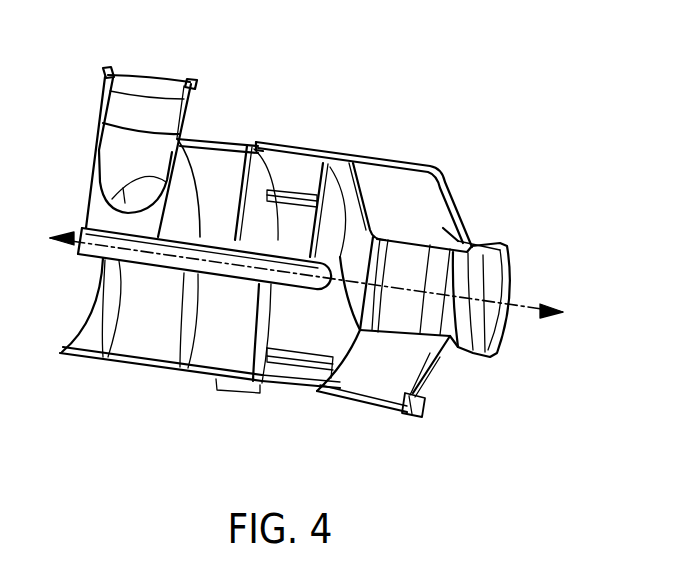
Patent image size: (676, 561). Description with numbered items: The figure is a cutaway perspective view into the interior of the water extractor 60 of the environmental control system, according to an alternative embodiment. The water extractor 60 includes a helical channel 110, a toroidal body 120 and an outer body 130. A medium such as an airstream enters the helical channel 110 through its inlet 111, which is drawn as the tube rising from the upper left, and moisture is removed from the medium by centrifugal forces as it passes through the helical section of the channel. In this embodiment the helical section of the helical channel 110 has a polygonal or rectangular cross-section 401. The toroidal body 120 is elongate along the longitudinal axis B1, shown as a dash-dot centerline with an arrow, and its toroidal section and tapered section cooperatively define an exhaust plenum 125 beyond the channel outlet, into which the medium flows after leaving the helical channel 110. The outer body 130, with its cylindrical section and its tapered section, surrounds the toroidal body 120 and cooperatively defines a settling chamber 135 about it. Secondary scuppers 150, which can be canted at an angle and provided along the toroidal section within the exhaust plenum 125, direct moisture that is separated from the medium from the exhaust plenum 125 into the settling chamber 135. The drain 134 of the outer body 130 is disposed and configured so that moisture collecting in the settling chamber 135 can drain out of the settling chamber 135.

The water extractor 60 is at (282, 87).
The helical channel 110 is at (140, 327).
The inlet 111 is at (143, 83).
The toroidal body 120 is at (208, 142).
The exhaust plenum 125 is at (323, 336).
The outer body 130 is at (310, 147).
The drain 134 is at (425, 407).
The settling chamber 135 is at (390, 384).
The secondary scuppers 150 is at (285, 360).
The polygonal or rectangular cross-section 401 is at (232, 191).
The longitudinal axis B1 is at (527, 297).